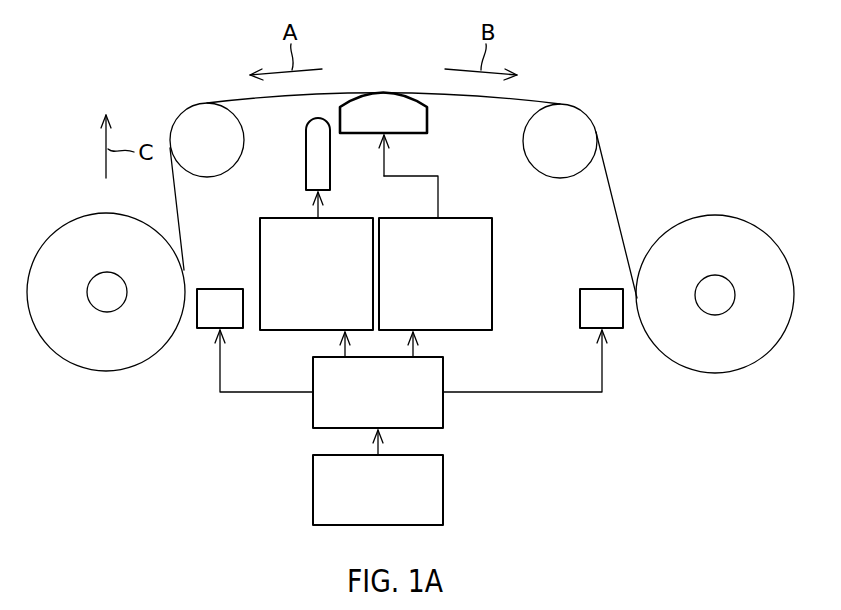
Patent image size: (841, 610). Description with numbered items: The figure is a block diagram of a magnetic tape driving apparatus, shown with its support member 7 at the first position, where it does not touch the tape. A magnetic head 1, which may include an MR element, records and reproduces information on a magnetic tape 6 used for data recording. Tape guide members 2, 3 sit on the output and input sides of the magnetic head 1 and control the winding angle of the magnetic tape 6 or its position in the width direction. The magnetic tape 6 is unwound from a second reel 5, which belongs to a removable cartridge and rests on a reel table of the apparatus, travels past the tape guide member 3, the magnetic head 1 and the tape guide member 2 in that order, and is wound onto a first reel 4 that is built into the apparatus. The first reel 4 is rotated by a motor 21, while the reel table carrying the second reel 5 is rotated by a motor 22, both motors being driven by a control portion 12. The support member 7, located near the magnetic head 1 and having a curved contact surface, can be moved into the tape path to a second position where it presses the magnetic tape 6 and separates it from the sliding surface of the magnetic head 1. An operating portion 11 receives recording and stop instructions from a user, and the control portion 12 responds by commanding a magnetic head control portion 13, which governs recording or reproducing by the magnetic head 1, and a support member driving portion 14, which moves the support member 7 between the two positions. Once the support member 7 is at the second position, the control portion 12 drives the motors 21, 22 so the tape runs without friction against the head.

The magnetic head 1 is at (429, 122).
The tape guide member 2 is at (189, 105).
The tape guide member 3 is at (586, 112).
The first reel 4 is at (106, 372).
The second reel 5 is at (715, 374).
The magnetic tape 6 is at (618, 203).
The support member 7 is at (305, 167).
The operating portion 11 is at (445, 476).
The control portion 12 is at (445, 370).
The magnetic head control portion 13 is at (460, 218).
The support member driving portion 14 is at (340, 218).
The motor 21 is at (220, 287).
The motor 22 is at (602, 287).